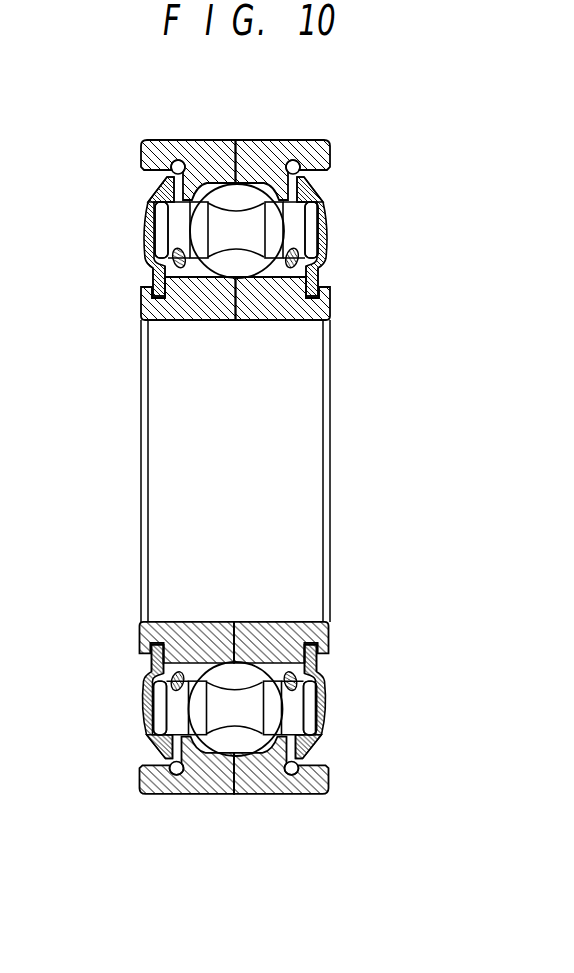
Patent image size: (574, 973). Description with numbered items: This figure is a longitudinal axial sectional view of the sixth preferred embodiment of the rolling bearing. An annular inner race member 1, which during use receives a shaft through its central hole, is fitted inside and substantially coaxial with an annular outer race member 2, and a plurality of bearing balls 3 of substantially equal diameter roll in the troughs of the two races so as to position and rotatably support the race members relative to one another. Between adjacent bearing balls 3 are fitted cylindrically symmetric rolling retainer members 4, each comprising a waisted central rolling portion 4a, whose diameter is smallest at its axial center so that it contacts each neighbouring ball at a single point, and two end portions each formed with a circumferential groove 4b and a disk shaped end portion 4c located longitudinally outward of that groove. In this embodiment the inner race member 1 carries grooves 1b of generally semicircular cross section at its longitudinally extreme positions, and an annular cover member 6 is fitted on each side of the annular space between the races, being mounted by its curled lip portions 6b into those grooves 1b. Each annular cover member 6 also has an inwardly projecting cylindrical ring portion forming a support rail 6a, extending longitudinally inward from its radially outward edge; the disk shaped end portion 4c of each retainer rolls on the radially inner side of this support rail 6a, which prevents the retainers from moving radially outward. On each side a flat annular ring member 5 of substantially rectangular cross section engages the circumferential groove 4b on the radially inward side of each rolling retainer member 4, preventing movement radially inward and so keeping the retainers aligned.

The inner race member 1 is at (140, 318).
The grooves 1b is at (162, 305).
The outer race member 2 is at (293, 139).
The bearing balls 3 is at (241, 192).
The rolling retainer members 4 is at (213, 232).
The central rolling portion 4a is at (223, 212).
The circumferential groove 4b is at (175, 160).
The disk shaped end portion 4c is at (148, 218).
The flat annular ring member 5 is at (176, 262).
The annular cover member 6 is at (146, 243).
The support rail 6a is at (147, 192).
The curled lip portions 6b is at (156, 290).